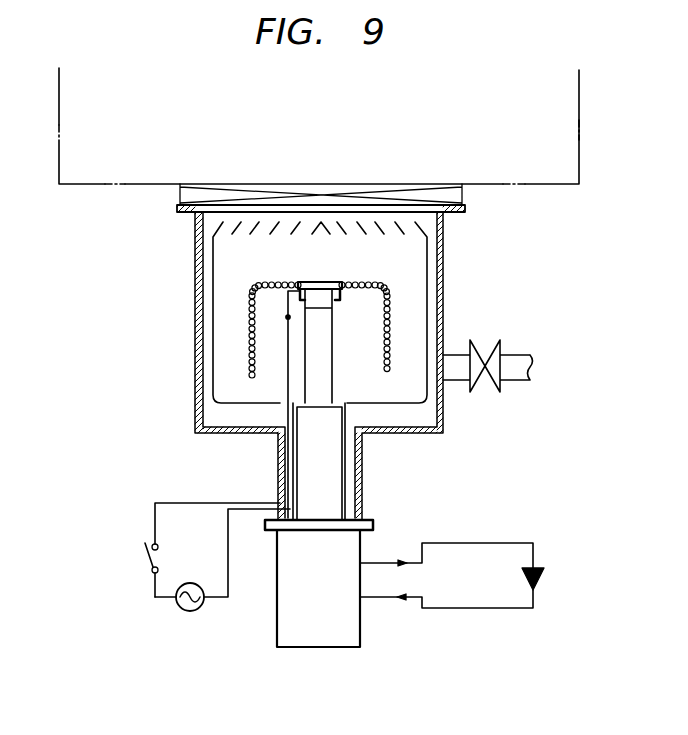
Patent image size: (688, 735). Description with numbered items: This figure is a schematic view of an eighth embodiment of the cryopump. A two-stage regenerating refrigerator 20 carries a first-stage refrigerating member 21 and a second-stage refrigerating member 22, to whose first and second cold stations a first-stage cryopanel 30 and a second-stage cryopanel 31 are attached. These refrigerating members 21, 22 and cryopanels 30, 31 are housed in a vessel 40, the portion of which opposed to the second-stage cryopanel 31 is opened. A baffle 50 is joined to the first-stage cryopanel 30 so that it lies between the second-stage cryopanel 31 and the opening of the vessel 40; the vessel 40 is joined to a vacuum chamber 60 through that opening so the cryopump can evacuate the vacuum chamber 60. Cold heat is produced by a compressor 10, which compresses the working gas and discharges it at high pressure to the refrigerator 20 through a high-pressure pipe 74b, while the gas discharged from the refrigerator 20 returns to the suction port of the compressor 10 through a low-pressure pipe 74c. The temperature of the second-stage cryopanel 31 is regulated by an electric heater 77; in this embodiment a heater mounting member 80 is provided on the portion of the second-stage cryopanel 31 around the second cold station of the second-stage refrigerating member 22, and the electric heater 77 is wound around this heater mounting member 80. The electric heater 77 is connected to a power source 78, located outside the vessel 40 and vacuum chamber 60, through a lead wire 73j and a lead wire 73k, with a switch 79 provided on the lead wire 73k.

The vacuum chamber 60 is at (555, 186).
The vessel 40 is at (445, 257).
The first-stage cryopanel 30 is at (212, 339).
The baffle 50 is at (402, 233).
The second-stage cryopanel 31 is at (250, 321).
The heater mounting member 80 is at (343, 302).
The electric heater 77 is at (351, 300).
The second-stage refrigerating member 22 is at (334, 379).
The first-stage refrigerating member 21 is at (345, 455).
The lead wire 73k is at (214, 502).
The switch 79 is at (148, 563).
The power source 78 is at (183, 610).
The lead wire 73j is at (218, 598).
The refrigerator 20 is at (260, 616).
The low-pressure pipe 74c is at (389, 562).
The high-pressure pipe 74b is at (388, 598).
The compressor 10 is at (540, 580).